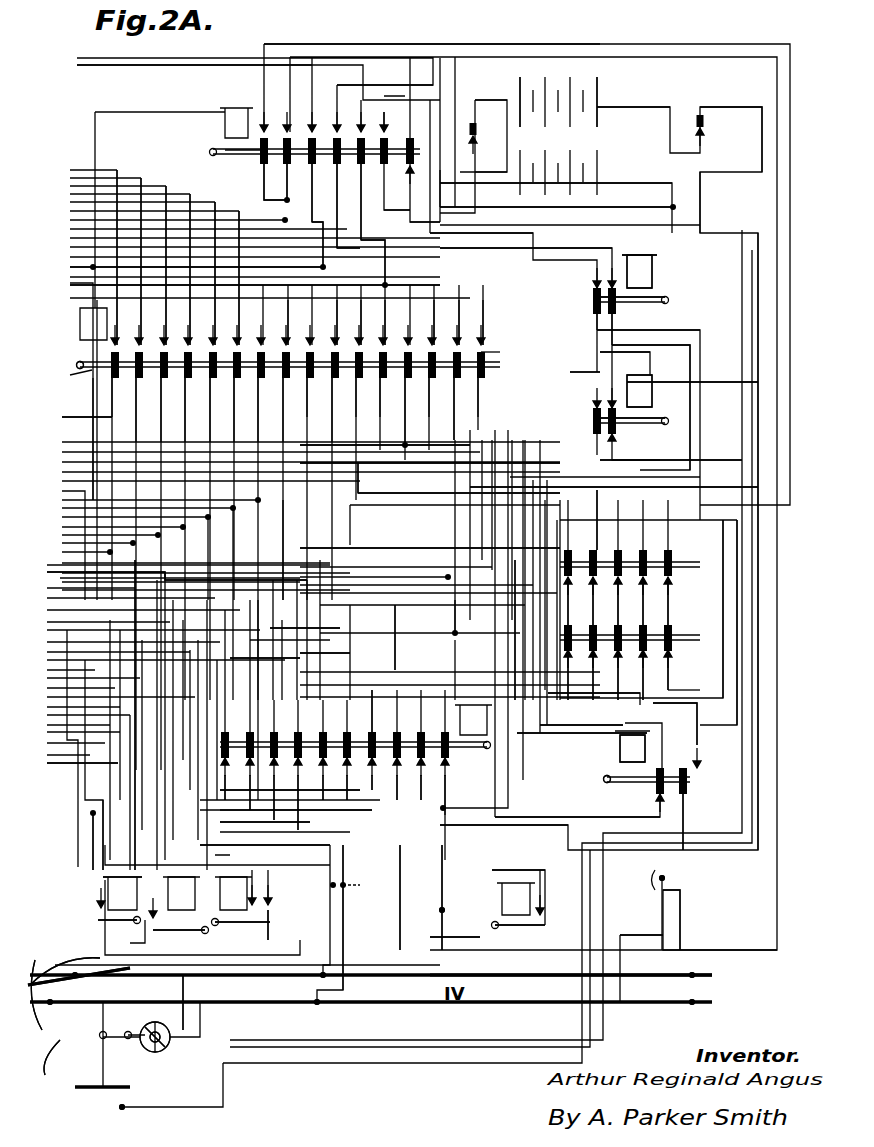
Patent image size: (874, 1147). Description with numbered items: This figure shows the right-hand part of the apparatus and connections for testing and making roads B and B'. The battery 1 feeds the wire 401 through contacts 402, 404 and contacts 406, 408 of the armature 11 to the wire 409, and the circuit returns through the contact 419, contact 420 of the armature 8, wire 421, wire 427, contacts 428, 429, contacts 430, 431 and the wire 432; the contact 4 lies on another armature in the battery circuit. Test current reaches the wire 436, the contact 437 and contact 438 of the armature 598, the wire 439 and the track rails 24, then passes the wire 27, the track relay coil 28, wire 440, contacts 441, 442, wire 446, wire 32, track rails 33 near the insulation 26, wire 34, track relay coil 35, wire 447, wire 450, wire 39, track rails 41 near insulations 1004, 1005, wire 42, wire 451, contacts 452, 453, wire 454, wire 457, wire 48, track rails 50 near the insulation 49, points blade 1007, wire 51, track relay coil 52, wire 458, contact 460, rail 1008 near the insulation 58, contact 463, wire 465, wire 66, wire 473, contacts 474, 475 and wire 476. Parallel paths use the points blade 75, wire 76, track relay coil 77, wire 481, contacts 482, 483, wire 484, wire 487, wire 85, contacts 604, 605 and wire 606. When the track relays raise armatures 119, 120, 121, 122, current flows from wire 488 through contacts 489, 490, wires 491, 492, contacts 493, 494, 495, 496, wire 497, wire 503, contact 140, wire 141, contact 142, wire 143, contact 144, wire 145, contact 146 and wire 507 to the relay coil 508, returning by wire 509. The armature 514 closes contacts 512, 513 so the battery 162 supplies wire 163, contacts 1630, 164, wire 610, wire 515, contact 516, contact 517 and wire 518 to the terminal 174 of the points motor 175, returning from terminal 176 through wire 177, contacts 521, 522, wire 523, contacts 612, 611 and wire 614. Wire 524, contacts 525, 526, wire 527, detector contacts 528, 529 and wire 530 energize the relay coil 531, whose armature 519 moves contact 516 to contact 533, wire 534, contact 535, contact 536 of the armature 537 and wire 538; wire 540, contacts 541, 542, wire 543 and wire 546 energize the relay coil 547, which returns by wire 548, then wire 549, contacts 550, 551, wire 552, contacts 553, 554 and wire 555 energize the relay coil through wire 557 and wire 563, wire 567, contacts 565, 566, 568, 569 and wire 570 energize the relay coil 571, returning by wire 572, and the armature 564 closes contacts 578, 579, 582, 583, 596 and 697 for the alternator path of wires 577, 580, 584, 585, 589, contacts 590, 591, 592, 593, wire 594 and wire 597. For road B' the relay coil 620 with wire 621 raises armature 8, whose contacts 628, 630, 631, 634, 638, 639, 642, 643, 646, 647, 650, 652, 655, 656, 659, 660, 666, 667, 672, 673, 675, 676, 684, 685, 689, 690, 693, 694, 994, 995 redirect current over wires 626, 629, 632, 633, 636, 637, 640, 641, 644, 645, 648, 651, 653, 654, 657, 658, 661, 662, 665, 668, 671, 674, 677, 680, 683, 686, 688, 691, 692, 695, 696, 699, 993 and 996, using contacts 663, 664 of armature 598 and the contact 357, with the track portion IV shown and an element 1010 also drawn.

The battery 1 is at (558, 111).
The contact on armature 5 4 is at (711, 609).
The armature 8 is at (87, 354).
The armature 11 is at (718, 622).
The track rails 24 is at (371, 976).
The insulation 26 is at (299, 981).
The wire 27 is at (277, 884).
The track relay coil 28 is at (233, 893).
The wire 32 is at (361, 894).
The track rails 33 is at (571, 967).
The wire 34 is at (690, 920).
The track relay coil 35 is at (516, 899).
The wire 39 is at (640, 934).
The track rails 41 is at (371, 1015).
The wire 42 is at (444, 938).
The wire 48 is at (361, 917).
The insulation 49 is at (315, 1013).
The track rails 50 is at (202, 1002).
The wire 51 is at (181, 868).
The track relay coil 52 is at (181, 893).
The insulation 58 is at (79, 1010).
The wire 66 is at (65, 968).
The points blade 75 is at (83, 981).
The wire 76 is at (127, 934).
The track relay coil 77 is at (145, 595).
The wire 85 is at (77, 835).
The armature 119 is at (117, 926).
The armature 120 is at (179, 939).
The armature 121 is at (238, 933).
The armature 122 is at (520, 933).
The contact 140 is at (555, 902).
The wire 141 is at (403, 897).
The contact 142 is at (280, 927).
The wire 143 is at (224, 887).
The contact 144 is at (167, 911).
The wire 145 is at (122, 868).
The contact 146 is at (81, 892).
The battery 162 is at (633, 88).
The wire 163 is at (710, 128).
The contact 164 is at (717, 119).
The contact 1630 is at (718, 137).
The terminal 174 is at (174, 1048).
The points motor 175 is at (154, 1052).
The terminal 176 is at (160, 1028).
The wire 177 is at (286, 547).
The contact 357 is at (282, 895).
The wire 401 is at (574, 333).
The contact 402 is at (684, 567).
The contact 404 is at (687, 601).
The contact 406 is at (686, 642).
The contact 408 is at (686, 670).
The wire 409 is at (686, 681).
The contact 419 is at (103, 439).
The contact 420 is at (67, 375).
The wire 421 is at (87, 424).
The wire 427 is at (430, 540).
The contact 428 is at (578, 561).
The contact 429 is at (580, 601).
The contact 430 is at (578, 639).
The contact 431 is at (580, 675).
The wire 432 is at (562, 453).
The wire 436 is at (177, 580).
The contact 437 is at (259, 790).
The contact 438 is at (258, 743).
The wire 439 is at (265, 656).
The wire 440 is at (265, 822).
The contact 441 is at (235, 785).
The contact 442 is at (234, 743).
The wire 446 is at (351, 876).
The wire 447 is at (533, 870).
The wire 450 is at (680, 875).
The wire 451 is at (458, 897).
The contact 452 is at (463, 794).
The contact 453 is at (462, 767).
The wire 454 is at (439, 670).
The wire 457 is at (293, 665).
The wire 458 is at (304, 626).
The contact 460 is at (306, 743).
The contact 463 is at (308, 801).
The wire 465 is at (266, 605).
The wire 473 is at (376, 637).
The contact 474 is at (405, 743).
The contact 475 is at (407, 786).
The wire 476 is at (448, 701).
The wire 481 is at (296, 816).
The contact 482 is at (332, 786).
The contact 483 is at (331, 743).
The wire 484 is at (337, 643).
The wire 487 is at (70, 835).
The wire 488 is at (299, 798).
The contact 489 is at (383, 781).
The contact 490 is at (381, 741).
The wire 491 is at (367, 692).
The wire 492 is at (596, 693).
The contact 493 is at (654, 675).
The contact 494 is at (449, 588).
The contact 495 is at (654, 601).
The contact 496 is at (652, 561).
The wire 497 is at (459, 487).
The wire 503 is at (460, 905).
The wire 507 is at (430, 458).
The relay coil 508 is at (639, 271).
The wire 509 is at (526, 239).
The contact 512 is at (639, 244).
The contact 513 is at (626, 294).
The armature 514 is at (657, 289).
The wire 515 is at (660, 323).
The contact 516 is at (623, 414).
The contact 517 is at (615, 447).
The wire 518 is at (671, 751).
The armature 519 is at (660, 407).
The contact 521 is at (402, 142).
The contact 522 is at (399, 179).
The wire 523 is at (416, 226).
The wire 524 is at (592, 328).
The contact 525 is at (581, 319).
The contact 526 is at (583, 286).
The wire 527 is at (683, 617).
The detector contact 528 is at (96, 1099).
The detector contact 529 is at (118, 1117).
The wire 530 is at (558, 727).
The relay coil 531 is at (639, 391).
The contact 533 is at (624, 381).
The wire 534 is at (668, 405).
The contact 535 is at (637, 783).
The contact 536 is at (637, 804).
The armature 537 is at (590, 778).
The wire 538 is at (351, 790).
The wire 540 is at (625, 344).
The contact 541 is at (584, 397).
The contact 542 is at (583, 421).
The wire 543 is at (581, 441).
The wire 546 is at (582, 745).
The relay coil 547 is at (632, 748).
The wire 548 is at (581, 729).
The wire 549 is at (683, 724).
The contact 550 is at (707, 749).
The contact 551 is at (697, 777).
The wire 552 is at (699, 818).
The contact 553 is at (358, 784).
The contact 554 is at (355, 743).
The wire 555 is at (416, 270).
The wire 557 is at (160, 104).
The wire 563 is at (556, 195).
The armature 564 is at (299, 144).
The contact 565 is at (433, 425).
The contact 566 is at (450, 380).
The wire 567 is at (436, 394).
The contact 568 is at (464, 351).
The contact 569 is at (447, 324).
The wire 570 is at (453, 132).
The relay coil 571 is at (473, 720).
The wire 572 is at (591, 386).
The wire 577 is at (385, 77).
The contact 578 is at (345, 131).
The contact 579 is at (350, 206).
The wire 580 is at (347, 236).
The contact 582 is at (319, 130).
The contact 583 is at (325, 193).
The wire 584 is at (289, 235).
The wire 585 is at (373, 202).
The wire 589 is at (379, 262).
The contact 590 is at (605, 675).
The contact 591 is at (603, 639).
The contact 592 is at (583, 371).
The contact 593 is at (603, 573).
The wire 594 is at (498, 222).
The contact 596 is at (303, 111).
The wire 597 is at (211, 72).
The armature 598 is at (419, 435).
The contact 604 is at (282, 741).
The contact 605 is at (282, 795).
The wire 606 is at (143, 715).
The wire 610 is at (715, 202).
The contact 611 is at (491, 125).
The contact 612 is at (490, 145).
The wire 614 is at (491, 91).
The relay coil 620 is at (93, 324).
The wire 621 is at (122, 331).
The wire 626 is at (111, 253).
The contact 628 is at (122, 397).
The wire 629 is at (293, 331).
The contact 630 is at (296, 322).
The contact 631 is at (294, 397).
The wire 632 is at (294, 429).
The wire 633 is at (268, 429).
The contact 634 is at (269, 397).
The wire 636 is at (268, 331).
The wire 637 is at (220, 429).
The contact 638 is at (220, 397).
The contact 639 is at (221, 331).
The wire 640 is at (223, 265).
The wire 641 is at (343, 331).
The contact 642 is at (345, 322).
The contact 643 is at (345, 397).
The wire 644 is at (344, 429).
The wire 645 is at (196, 427).
The contact 646 is at (195, 397).
The contact 647 is at (195, 337).
The wire 648 is at (198, 261).
The contact 650 is at (245, 337).
The wire 651 is at (245, 429).
The contact 652 is at (245, 397).
The wire 653 is at (236, 271).
The wire 654 is at (145, 429).
The contact 655 is at (145, 397).
The contact 656 is at (146, 335).
The wire 657 is at (147, 255).
The wire 658 is at (170, 429).
The contact 659 is at (172, 397).
The contact 660 is at (168, 336).
The wire 661 is at (173, 257).
The wire 662 is at (504, 830).
The contact 663 is at (430, 785).
The contact 664 is at (430, 741).
The wire 665 is at (440, 616).
The contact 666 is at (319, 397).
The contact 667 is at (318, 336).
The wire 668 is at (196, 243).
The wire 671 is at (373, 478).
The contact 672 is at (393, 397).
The contact 673 is at (394, 322).
The wire 674 is at (391, 331).
The contact 675 is at (368, 397).
The contact 676 is at (369, 322).
The wire 677 is at (366, 331).
The wire 680 is at (265, 847).
The wire 683 is at (255, 266).
The contact 684 is at (416, 335).
The contact 685 is at (415, 397).
The wire 686 is at (415, 429).
The wire 688 is at (493, 397).
The contact 689 is at (495, 356).
The contact 690 is at (490, 322).
The wire 691 is at (489, 331).
The wire 692 is at (465, 331).
The contact 693 is at (468, 322).
The contact 694 is at (467, 397).
The wire 695 is at (467, 431).
The wire 696 is at (445, 162).
The contact 697 is at (392, 135).
The wire 699 is at (386, 210).
The wire 993 is at (385, 443).
The contact 994 is at (442, 397).
The contact 995 is at (442, 322).
The wire 996 is at (440, 331).
The insulation 1004 is at (712, 1011).
The insulation 1005 is at (717, 969).
The points blade 1007 is at (60, 997).
The track rail 1008 is at (47, 1057).
The pivot 1010 is at (68, 1024).